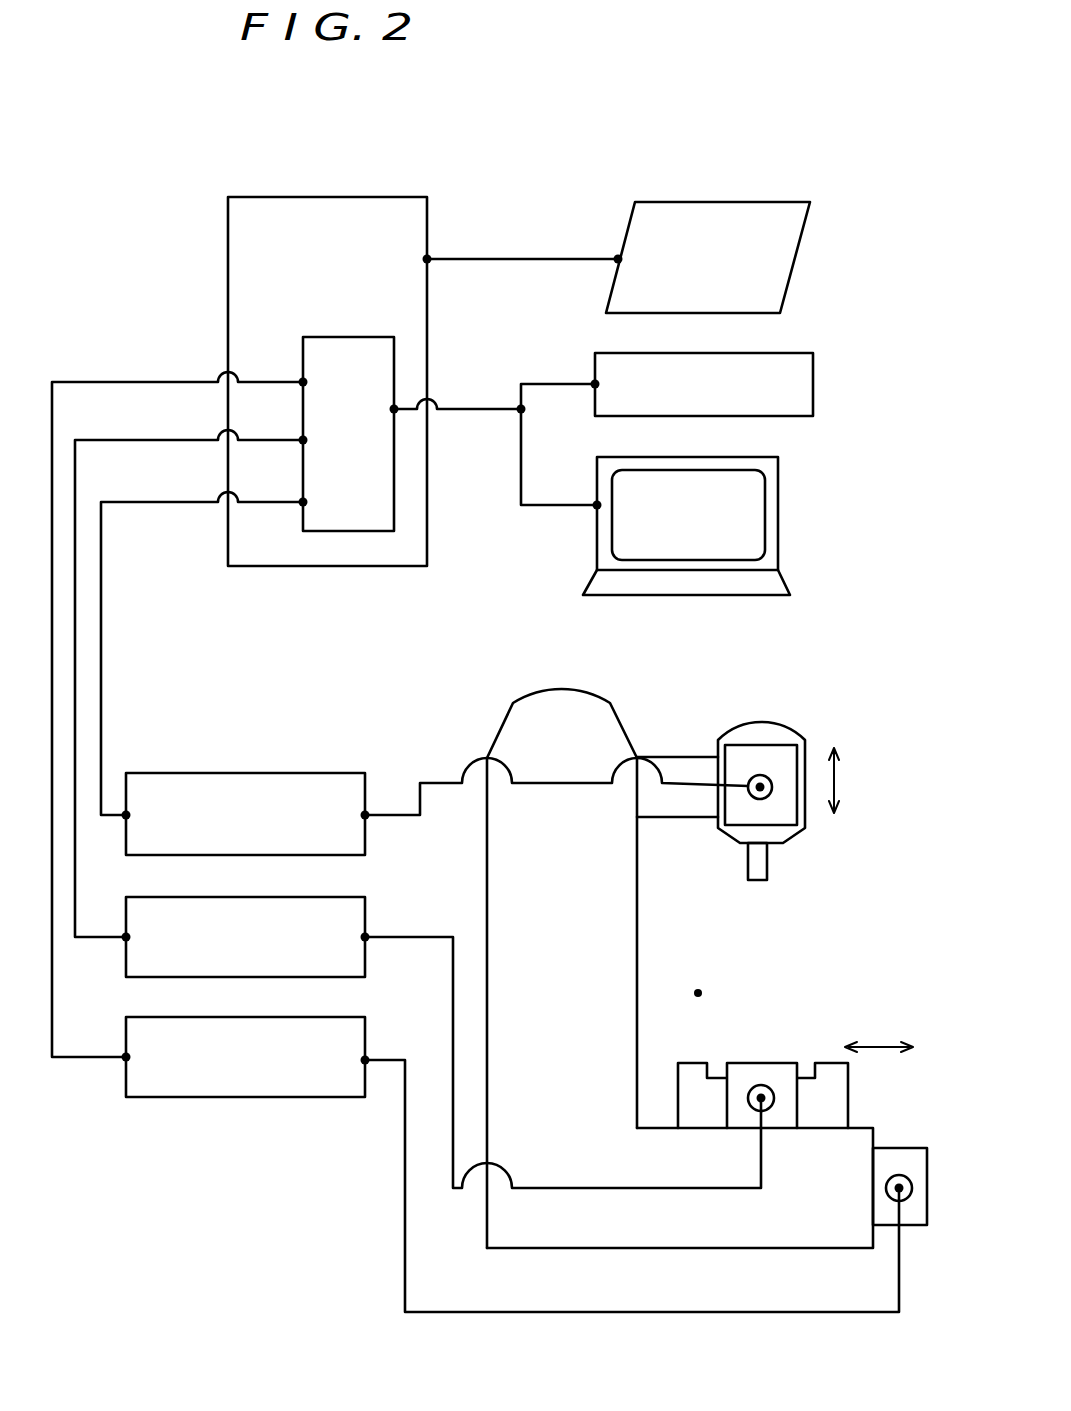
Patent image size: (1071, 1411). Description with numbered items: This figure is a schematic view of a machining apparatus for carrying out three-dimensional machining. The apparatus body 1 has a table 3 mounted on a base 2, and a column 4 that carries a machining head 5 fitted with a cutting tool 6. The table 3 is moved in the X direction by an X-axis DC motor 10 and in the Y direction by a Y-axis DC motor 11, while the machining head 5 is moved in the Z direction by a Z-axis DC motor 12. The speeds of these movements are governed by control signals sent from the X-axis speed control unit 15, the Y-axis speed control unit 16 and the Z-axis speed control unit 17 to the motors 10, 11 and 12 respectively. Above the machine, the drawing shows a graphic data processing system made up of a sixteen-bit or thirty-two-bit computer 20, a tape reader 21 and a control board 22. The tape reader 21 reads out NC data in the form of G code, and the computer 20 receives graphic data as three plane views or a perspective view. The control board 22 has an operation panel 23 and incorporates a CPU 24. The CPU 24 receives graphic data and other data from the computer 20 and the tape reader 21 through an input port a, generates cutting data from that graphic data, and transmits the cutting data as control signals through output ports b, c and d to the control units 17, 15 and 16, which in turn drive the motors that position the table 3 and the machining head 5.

The apparatus body 1 is at (686, 675).
The base 2 is at (642, 1248).
The table 3 is at (850, 1103).
The column 4 is at (637, 898).
The machining head 5 is at (782, 722).
The cutting tool 6 is at (768, 868).
The X-axis DC motor 10 is at (753, 1063).
The Y-axis DC motor 11 is at (877, 1168).
The Z-axis DC motor 12 is at (740, 752).
The X-axis speed control unit 15 is at (365, 912).
The Y-axis speed control unit 16 is at (365, 1038).
The Z-axis speed control unit 17 is at (325, 773).
The computer 20 is at (597, 533).
The tape reader 21 is at (595, 360).
The control board 22 is at (327, 384).
The operation panel 23 is at (690, 202).
The CPU 24 is at (353, 533).